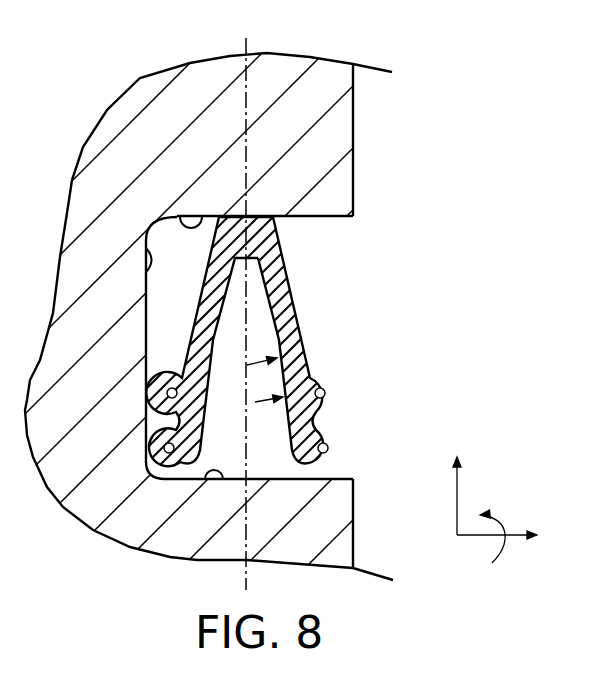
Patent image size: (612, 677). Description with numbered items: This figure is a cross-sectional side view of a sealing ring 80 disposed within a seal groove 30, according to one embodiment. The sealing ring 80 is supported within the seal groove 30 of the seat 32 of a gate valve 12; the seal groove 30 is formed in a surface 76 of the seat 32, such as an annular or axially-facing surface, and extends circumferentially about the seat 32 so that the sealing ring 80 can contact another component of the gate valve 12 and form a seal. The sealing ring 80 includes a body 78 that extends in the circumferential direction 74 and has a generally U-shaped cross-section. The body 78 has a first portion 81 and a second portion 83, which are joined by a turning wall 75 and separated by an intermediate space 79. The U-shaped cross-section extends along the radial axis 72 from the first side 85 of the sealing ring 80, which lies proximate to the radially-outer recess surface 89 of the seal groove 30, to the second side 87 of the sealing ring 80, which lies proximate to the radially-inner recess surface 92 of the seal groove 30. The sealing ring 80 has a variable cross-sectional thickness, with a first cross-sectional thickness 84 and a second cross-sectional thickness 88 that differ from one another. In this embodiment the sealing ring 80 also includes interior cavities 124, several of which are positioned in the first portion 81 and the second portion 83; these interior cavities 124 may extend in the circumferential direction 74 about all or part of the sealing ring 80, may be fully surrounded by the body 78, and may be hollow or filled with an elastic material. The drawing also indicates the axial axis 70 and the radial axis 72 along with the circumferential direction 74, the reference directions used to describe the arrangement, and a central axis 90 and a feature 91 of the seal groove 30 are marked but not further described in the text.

The gate valve 12 is at (357, 47).
The seal groove 30 is at (333, 237).
The seat 32 is at (347, 76).
The surface 76 is at (353, 123).
The second side 87 is at (272, 200).
The central axis 90 is at (245, 52).
The turning wall 75 is at (238, 216).
The radially-inner recess surface 92 is at (196, 219).
The side protrusion 91 is at (146, 270).
The radially-outer recess surface 89 is at (223, 481).
The first side 85 is at (320, 484).
The sealing ring 80 is at (357, 272).
The first portion 81 is at (203, 313).
The second portion 83 is at (282, 299).
The body 78 is at (280, 263).
The second cross-sectional thickness 88 is at (302, 352).
The first cross-sectional thickness 84 is at (347, 382).
The interior cavities 124 is at (324, 447).
The intermediate space 79 is at (285, 465).
The axial axis 70 is at (487, 536).
The radial axis 72 is at (458, 500).
The circumferential direction 74 is at (503, 518).